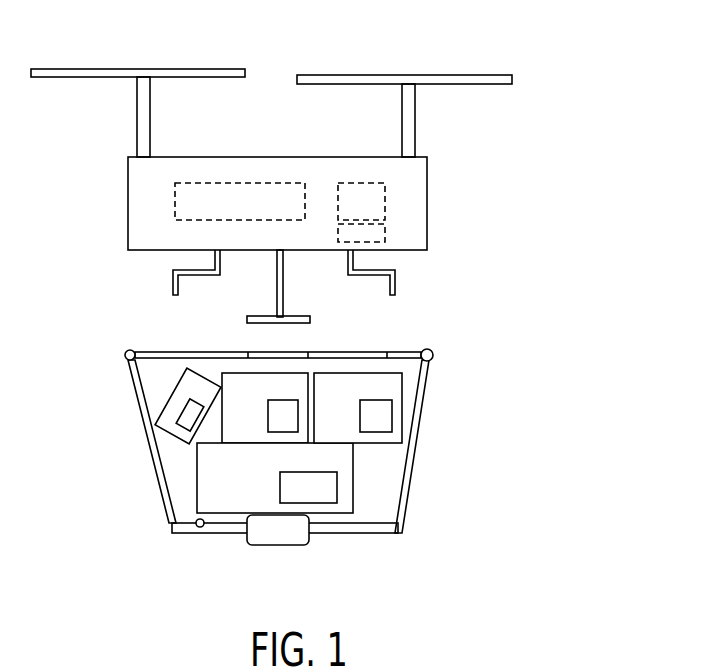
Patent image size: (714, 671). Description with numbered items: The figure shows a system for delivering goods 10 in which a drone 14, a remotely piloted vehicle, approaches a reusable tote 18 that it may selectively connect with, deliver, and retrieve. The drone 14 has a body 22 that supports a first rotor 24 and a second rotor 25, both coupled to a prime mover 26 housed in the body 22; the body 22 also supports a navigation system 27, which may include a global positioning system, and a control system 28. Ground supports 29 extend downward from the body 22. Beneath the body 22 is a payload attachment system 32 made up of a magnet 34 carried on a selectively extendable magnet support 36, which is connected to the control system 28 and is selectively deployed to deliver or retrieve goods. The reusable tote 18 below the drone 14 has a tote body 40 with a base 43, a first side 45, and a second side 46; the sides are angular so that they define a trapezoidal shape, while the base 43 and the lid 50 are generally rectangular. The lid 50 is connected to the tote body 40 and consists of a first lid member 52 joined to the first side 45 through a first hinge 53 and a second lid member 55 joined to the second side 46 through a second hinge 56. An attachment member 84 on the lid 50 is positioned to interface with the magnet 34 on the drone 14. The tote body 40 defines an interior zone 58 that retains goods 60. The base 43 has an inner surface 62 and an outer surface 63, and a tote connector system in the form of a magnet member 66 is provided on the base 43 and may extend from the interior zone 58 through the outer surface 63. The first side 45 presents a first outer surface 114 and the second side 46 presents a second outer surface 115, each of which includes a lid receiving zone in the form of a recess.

The system for delivering goods 10 is at (528, 365).
The drone 14 is at (455, 195).
The reusable tote 18 is at (428, 512).
The body 22 is at (128, 203).
The first rotor 24 is at (80, 72).
The second rotor 25 is at (370, 77).
The prime mover 26 is at (230, 182).
The navigation system 27 is at (358, 182).
The control system 28 is at (337, 238).
The ground supports 29 is at (405, 279).
The payload attachment system 32 is at (320, 298).
The magnet 34 is at (247, 318).
The selectively extendable magnet support 36 is at (275, 282).
The tote body 40 is at (398, 533).
The base 43 is at (345, 538).
The first side 45 is at (150, 462).
The second side 46 is at (407, 472).
The lid 50 is at (150, 347).
The first lid member 52 is at (167, 352).
The first hinge 53 is at (123, 358).
The second lid member 55 is at (390, 350).
The second hinge 56 is at (433, 358).
The interior zone 58 is at (175, 468).
The goods 60 is at (403, 385).
The inner surface 62 is at (208, 525).
The outer surface 63 is at (240, 532).
The magnet member 66 is at (278, 538).
The attachment member 84 is at (280, 353).
The first outer surface 114 is at (140, 393).
The second outer surface 115 is at (412, 433).